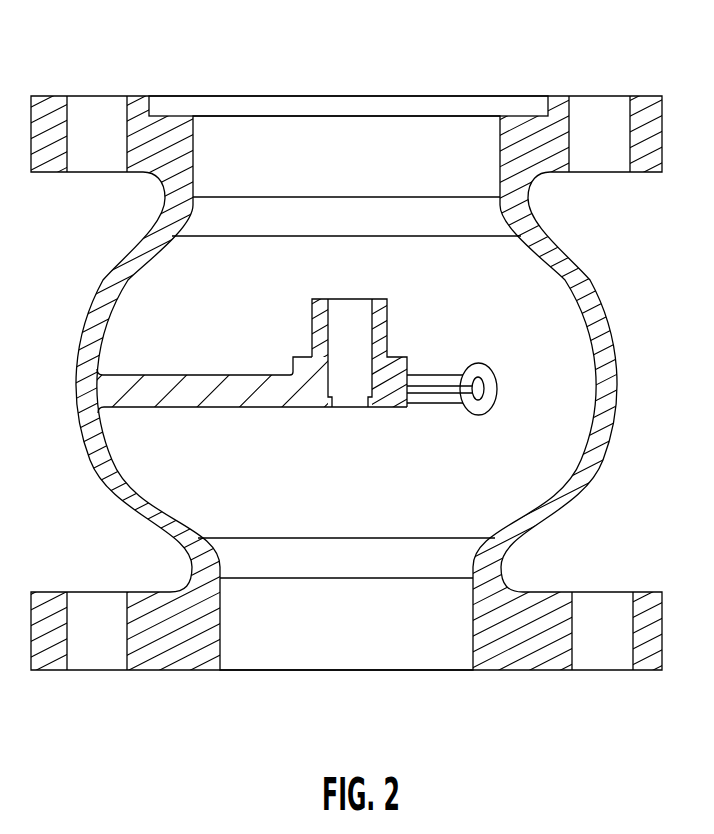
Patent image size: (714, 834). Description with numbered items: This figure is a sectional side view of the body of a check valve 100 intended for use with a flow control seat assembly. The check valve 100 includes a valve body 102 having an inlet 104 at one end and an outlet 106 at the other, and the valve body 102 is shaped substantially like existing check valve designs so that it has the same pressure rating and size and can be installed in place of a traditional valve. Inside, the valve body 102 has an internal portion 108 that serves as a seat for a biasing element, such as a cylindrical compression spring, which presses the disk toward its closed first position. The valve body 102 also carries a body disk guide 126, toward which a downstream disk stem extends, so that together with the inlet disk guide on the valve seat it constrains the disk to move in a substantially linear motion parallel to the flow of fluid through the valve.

The check valve 100 is at (518, 55).
The valve body 102 is at (108, 473).
The inlet 104 is at (267, 143).
The outlet 106 is at (306, 637).
The internal portion 108 is at (247, 375).
The body disk guide 126 is at (388, 333).